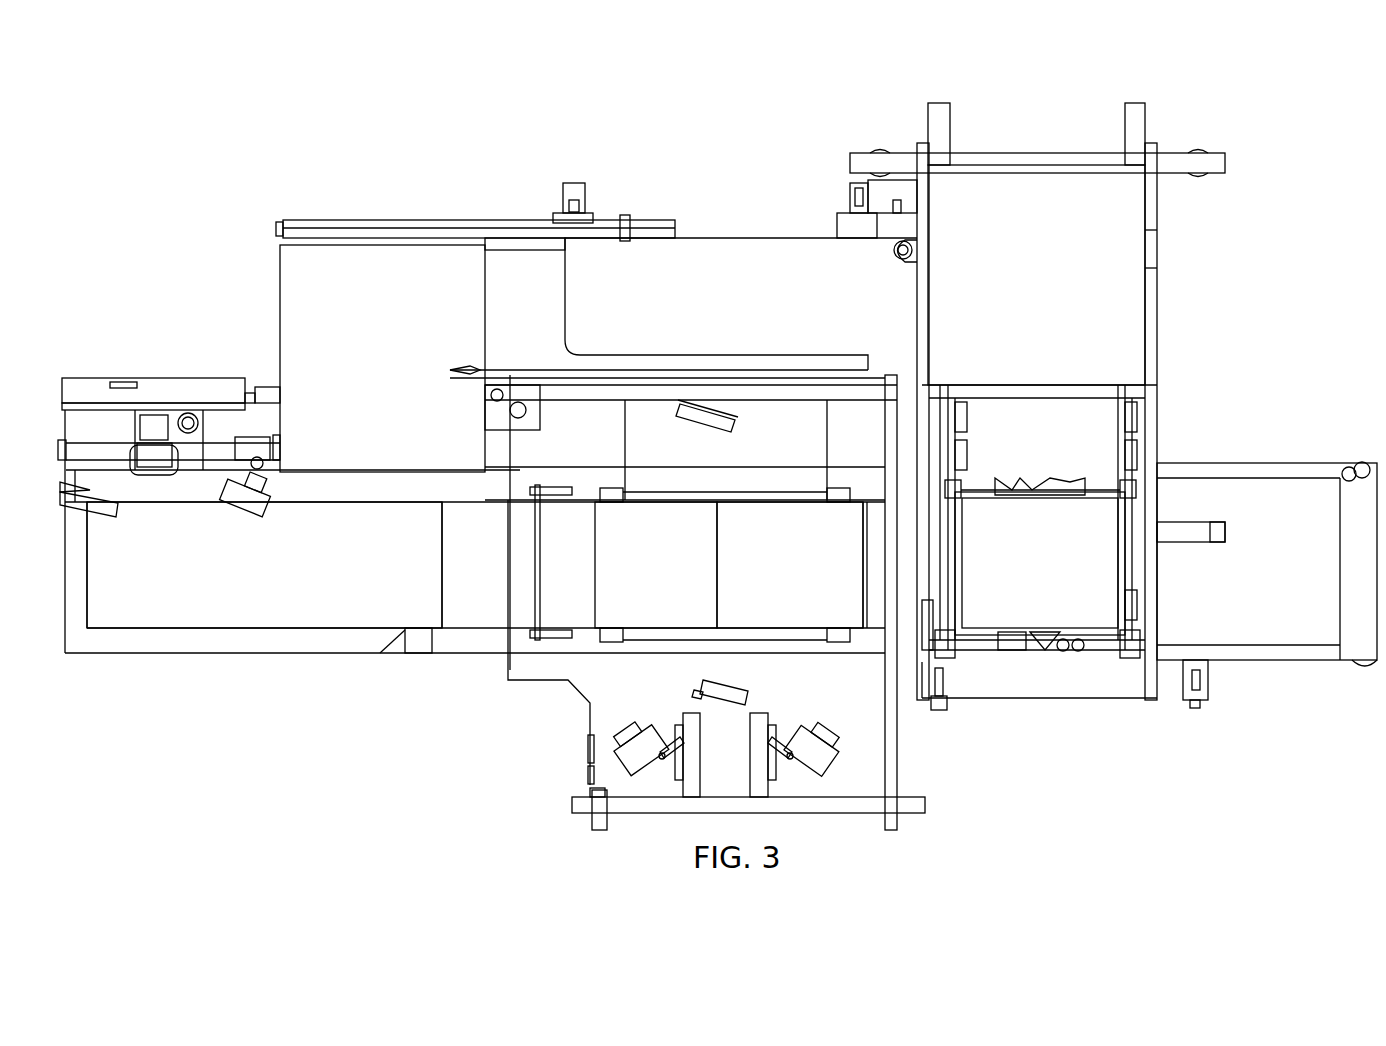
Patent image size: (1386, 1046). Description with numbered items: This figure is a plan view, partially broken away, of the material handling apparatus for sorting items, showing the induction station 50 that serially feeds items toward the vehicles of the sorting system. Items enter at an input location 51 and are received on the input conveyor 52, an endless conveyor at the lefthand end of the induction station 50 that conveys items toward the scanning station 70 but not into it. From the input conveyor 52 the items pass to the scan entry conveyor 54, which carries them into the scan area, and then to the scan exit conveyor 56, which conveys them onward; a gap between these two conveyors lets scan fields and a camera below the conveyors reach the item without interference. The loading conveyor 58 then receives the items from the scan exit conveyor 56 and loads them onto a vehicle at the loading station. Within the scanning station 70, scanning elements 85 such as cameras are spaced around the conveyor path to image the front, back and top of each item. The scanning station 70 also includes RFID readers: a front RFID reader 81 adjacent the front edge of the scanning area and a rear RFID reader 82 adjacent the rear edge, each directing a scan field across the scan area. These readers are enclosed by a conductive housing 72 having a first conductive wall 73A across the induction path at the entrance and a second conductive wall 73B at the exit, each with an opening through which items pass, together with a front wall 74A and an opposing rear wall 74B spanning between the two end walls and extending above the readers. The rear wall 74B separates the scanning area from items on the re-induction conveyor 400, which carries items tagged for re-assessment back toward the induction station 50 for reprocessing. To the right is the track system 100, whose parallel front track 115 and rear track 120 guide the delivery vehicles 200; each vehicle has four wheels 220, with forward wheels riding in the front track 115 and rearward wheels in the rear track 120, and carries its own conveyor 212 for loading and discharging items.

The induction station 50 is at (187, 675).
The input location 51 is at (297, 596).
The input conveyor 52 is at (264, 565).
The scan entry conveyor 54 is at (656, 565).
The scan exit conveyor 56 is at (743, 565).
The loading conveyor 58 is at (868, 545).
The scanning station 70 is at (870, 812).
The conductive housing 72 is at (535, 682).
The first conductive wall 73A is at (508, 523).
The second conductive wall 73B is at (900, 720).
The front wall 74A is at (640, 815).
The rear wall 74B is at (650, 398).
The front RFID reader 81 is at (718, 703).
The rear RFID reader 82 is at (733, 427).
The scanning elements 85 is at (635, 730).
The track system 100 is at (1162, 290).
The front track 115 is at (930, 298).
The rear track 120 is at (1135, 218).
The delivery vehicles 200 is at (1095, 655).
The conveyor 212 is at (1040, 563).
The wheels 220 is at (1165, 635).
The re-induction conveyor 400 is at (475, 327).